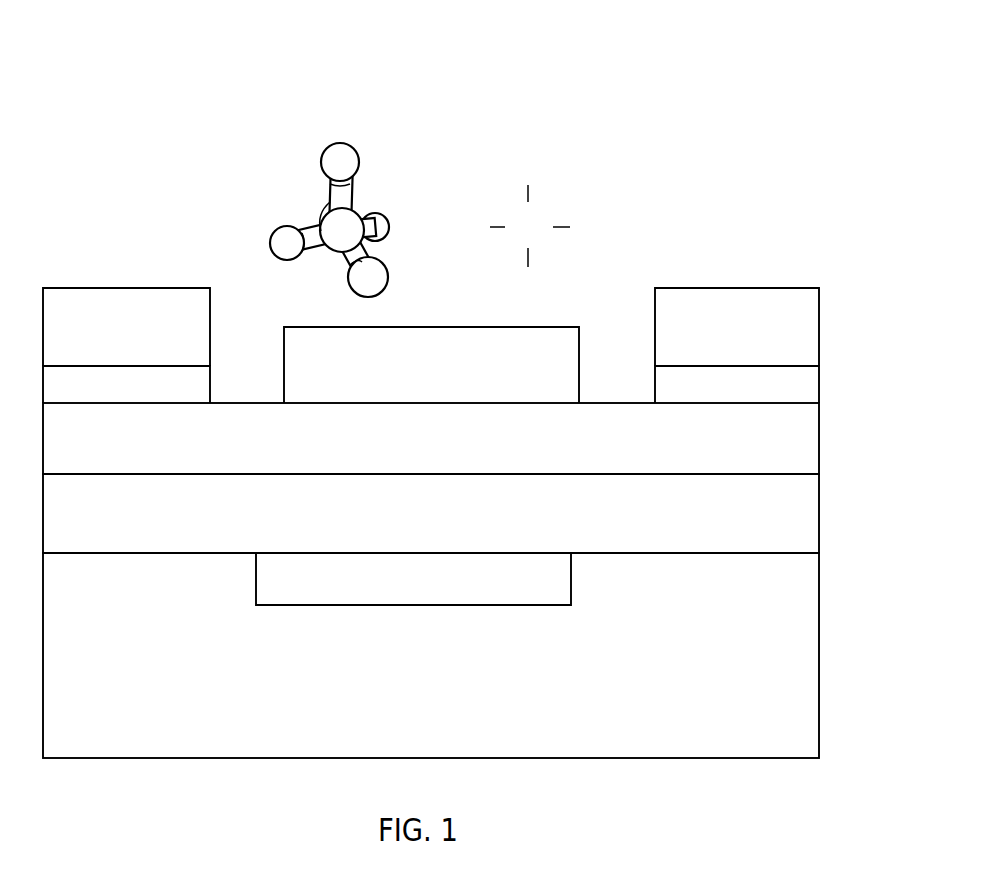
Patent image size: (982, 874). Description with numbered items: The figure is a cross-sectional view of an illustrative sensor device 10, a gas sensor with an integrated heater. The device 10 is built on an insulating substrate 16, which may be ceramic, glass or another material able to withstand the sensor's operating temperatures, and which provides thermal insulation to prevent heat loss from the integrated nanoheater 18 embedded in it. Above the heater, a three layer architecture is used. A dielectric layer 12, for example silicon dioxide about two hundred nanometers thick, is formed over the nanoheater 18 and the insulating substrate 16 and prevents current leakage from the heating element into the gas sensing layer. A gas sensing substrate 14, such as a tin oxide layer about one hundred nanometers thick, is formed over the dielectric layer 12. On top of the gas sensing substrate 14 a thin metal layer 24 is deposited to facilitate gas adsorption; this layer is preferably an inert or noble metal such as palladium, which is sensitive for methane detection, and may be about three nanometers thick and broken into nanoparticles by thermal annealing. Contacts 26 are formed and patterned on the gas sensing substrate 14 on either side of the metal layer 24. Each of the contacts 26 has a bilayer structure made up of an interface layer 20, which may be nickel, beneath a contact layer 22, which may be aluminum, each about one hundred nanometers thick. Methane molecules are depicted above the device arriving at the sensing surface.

The sensor device 10 is at (445, 24).
The dielectric layer 12 is at (805, 512).
The gas sensing substrate 14 is at (805, 439).
The insulating substrate 16 is at (805, 679).
The nanoheater 18 is at (546, 583).
The interface layer 20 is at (805, 379).
The contact layer 22 is at (805, 320).
The metal layer 24 is at (551, 325).
The contacts 26 is at (165, 209).